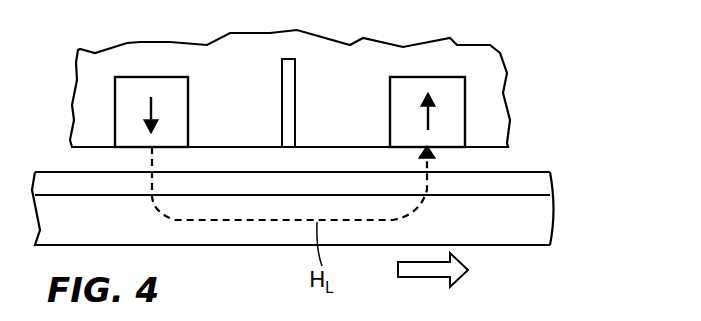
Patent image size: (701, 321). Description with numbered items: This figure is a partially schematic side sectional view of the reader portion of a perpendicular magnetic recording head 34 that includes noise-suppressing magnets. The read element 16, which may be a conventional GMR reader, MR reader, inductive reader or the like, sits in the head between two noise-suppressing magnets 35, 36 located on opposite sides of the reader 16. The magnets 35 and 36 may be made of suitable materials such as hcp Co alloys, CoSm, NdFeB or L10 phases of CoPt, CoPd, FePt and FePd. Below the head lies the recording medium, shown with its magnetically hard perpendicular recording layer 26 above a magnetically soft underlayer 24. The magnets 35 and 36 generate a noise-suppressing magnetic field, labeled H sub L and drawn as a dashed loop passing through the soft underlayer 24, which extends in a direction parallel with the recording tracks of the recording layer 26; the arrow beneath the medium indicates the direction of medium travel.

The perpendicular magnetic recording head 34 is at (183, 52).
The noise-suppressing magnet 35 is at (178, 96).
The noise-suppressing magnet 36 is at (430, 82).
The read element 16 is at (292, 85).
The magnetically hard perpendicular recording layer 26 is at (538, 183).
The magnetically soft underlayer 24 is at (537, 225).